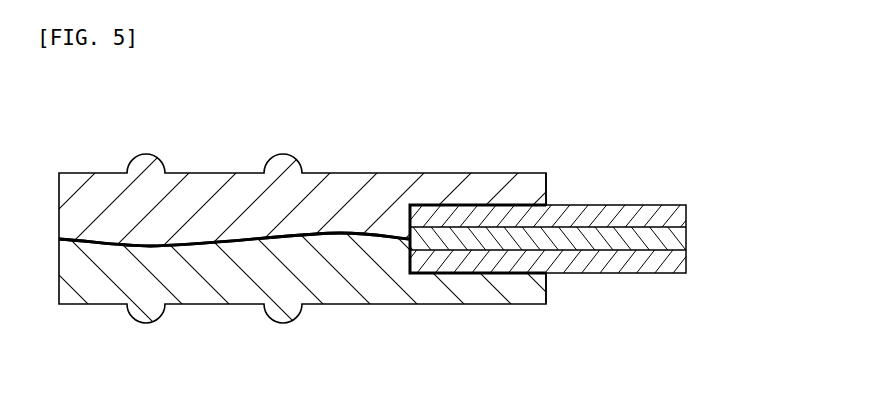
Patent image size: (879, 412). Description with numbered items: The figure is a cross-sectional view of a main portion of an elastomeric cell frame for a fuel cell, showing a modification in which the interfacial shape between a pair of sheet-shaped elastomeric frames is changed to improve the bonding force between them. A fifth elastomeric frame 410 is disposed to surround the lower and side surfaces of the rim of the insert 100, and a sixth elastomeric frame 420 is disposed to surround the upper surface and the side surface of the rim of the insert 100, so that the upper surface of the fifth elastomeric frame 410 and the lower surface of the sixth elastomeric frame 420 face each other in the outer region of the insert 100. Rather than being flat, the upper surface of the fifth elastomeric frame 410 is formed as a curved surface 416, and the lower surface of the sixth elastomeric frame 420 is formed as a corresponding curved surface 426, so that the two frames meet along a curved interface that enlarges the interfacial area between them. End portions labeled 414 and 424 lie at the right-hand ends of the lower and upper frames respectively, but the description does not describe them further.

The insert 100 is at (706, 240).
The fifth elastomeric frame 410 is at (88, 288).
The lower block end portion 414 is at (546, 294).
The curved surface 416 is at (338, 226).
The sixth elastomeric frame 420 is at (88, 188).
The upper block end portion 424 is at (546, 184).
The curved surface 426 is at (235, 168).